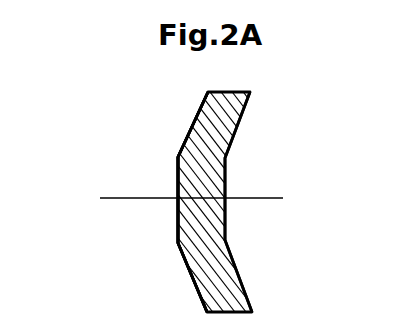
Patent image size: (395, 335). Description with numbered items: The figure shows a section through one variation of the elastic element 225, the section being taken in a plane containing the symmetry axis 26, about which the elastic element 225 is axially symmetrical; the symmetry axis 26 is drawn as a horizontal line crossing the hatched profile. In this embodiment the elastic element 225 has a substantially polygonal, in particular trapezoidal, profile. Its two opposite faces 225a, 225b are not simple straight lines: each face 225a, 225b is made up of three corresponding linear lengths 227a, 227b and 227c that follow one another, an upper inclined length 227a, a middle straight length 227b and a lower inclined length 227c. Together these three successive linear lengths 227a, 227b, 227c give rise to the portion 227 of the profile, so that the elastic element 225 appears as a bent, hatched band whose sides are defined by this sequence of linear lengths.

The elastic element 225 is at (106, 140).
The face 225a is at (124, 239).
The face 225b is at (267, 126).
The portion 227 is at (166, 193).
The linear length 227a is at (195, 143).
The linear length 227b is at (203, 180).
The linear length 227c is at (198, 257).
The symmetry axis 26 is at (272, 199).